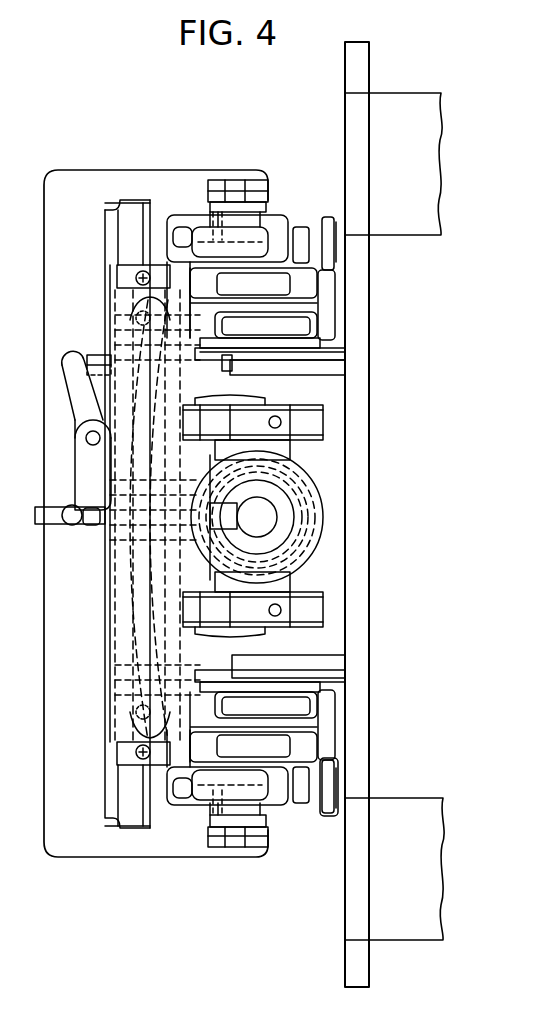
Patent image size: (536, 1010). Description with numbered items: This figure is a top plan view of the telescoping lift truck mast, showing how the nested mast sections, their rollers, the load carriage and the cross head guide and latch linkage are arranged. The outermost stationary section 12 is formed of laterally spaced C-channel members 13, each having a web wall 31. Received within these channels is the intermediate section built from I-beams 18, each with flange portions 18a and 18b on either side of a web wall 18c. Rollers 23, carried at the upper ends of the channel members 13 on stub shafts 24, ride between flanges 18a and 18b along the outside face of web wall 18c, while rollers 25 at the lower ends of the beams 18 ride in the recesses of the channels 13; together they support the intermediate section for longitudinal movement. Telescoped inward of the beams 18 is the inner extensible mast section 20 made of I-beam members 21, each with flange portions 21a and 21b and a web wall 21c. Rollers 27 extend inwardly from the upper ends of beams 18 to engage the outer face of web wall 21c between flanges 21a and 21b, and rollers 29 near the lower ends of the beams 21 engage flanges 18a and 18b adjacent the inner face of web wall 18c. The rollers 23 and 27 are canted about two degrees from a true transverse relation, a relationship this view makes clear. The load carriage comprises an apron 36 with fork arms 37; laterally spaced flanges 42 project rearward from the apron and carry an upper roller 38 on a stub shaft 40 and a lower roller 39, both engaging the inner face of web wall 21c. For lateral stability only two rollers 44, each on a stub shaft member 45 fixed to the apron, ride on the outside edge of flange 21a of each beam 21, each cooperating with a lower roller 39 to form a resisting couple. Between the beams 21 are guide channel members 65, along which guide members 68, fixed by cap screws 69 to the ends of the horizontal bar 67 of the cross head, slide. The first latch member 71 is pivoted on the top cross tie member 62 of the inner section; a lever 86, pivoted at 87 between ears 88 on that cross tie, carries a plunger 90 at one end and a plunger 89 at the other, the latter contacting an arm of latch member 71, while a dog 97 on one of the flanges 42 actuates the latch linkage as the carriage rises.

The stationary section 12 is at (152, 194).
The channel member 13 is at (178, 205).
The I-beam 18 is at (303, 252).
The flange portion 18a is at (301, 234).
The flange portion 18b is at (186, 226).
The web wall 18c is at (251, 262).
The inner extensible mast section 20 is at (338, 294).
The I-beam member 21 is at (325, 321).
The flange portion 21a is at (323, 287).
The flange portion 21b is at (150, 298).
The web wall 21c is at (290, 307).
The roller 23 is at (250, 232).
The stub shaft 24 is at (262, 202).
The roller 25 is at (215, 237).
The roller 27 is at (300, 745).
The roller 29 is at (300, 283).
The web wall 31 is at (236, 182).
The apron 36 is at (370, 464).
The fork arm 37 is at (412, 93).
The roller 38 is at (300, 331).
The roller 39 is at (310, 343).
The stub shaft 40 is at (270, 683).
The flange 42 is at (323, 368).
The stabilizing roller 44 is at (337, 218).
The stub shaft member 45 is at (340, 787).
The cross tie member 62 is at (128, 688).
The channel member 65 is at (248, 400).
The horizontal bar 67 is at (112, 569).
The guide member 68 is at (215, 422).
The cap screw 69 is at (112, 479).
The first latch member 71 is at (226, 517).
The lever 86 is at (80, 400).
The pivot 87 is at (86, 439).
The ear 88 is at (85, 456).
The plunger 89 is at (102, 534).
The plunger 90 is at (90, 354).
The dog 97 is at (232, 364).